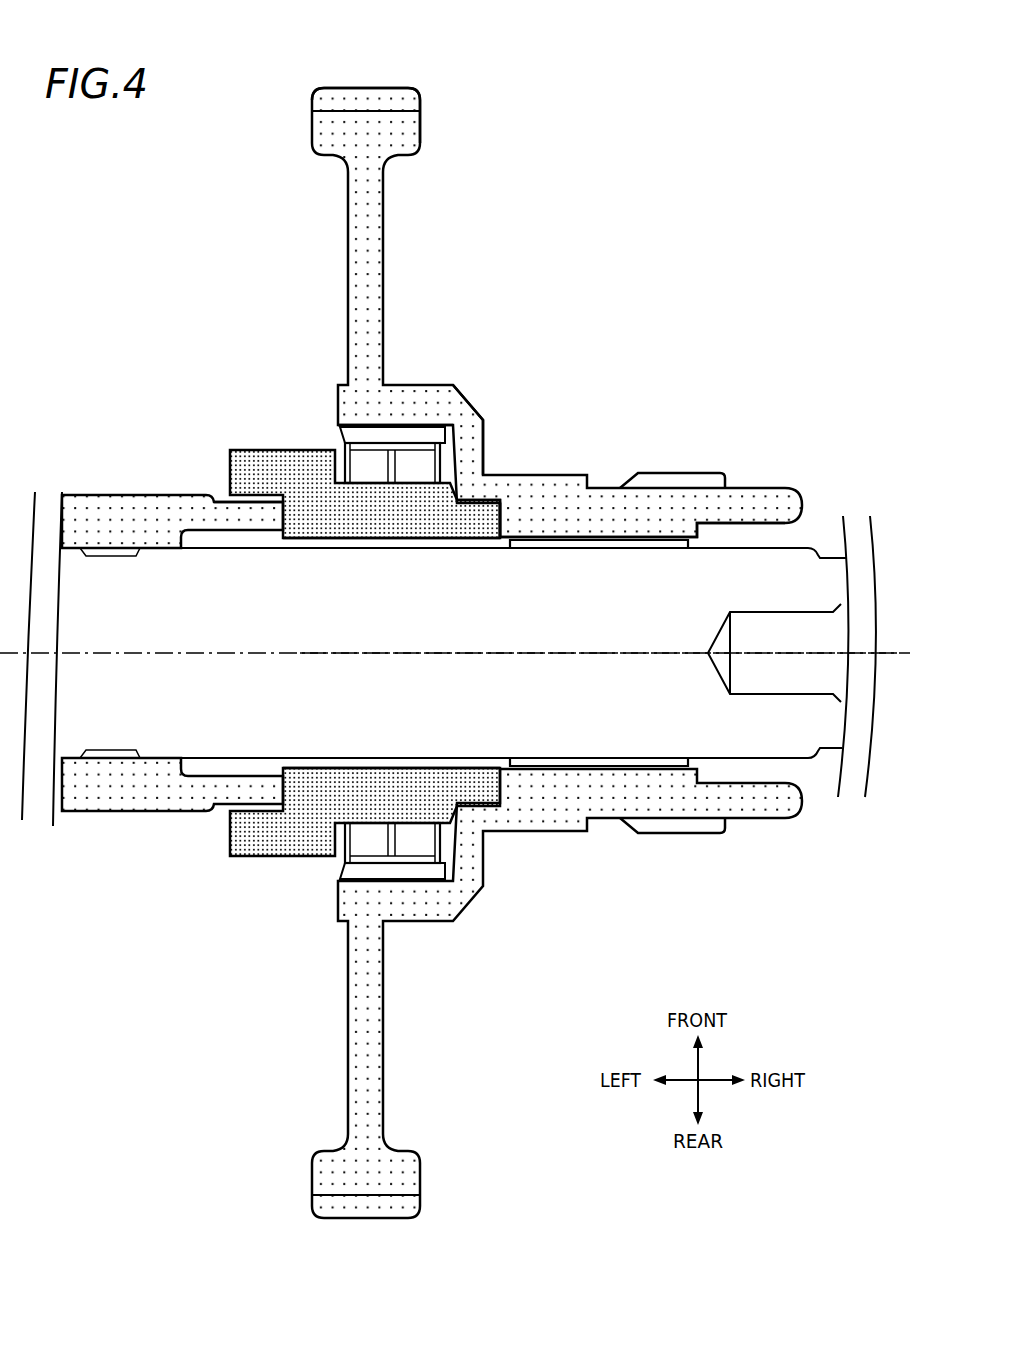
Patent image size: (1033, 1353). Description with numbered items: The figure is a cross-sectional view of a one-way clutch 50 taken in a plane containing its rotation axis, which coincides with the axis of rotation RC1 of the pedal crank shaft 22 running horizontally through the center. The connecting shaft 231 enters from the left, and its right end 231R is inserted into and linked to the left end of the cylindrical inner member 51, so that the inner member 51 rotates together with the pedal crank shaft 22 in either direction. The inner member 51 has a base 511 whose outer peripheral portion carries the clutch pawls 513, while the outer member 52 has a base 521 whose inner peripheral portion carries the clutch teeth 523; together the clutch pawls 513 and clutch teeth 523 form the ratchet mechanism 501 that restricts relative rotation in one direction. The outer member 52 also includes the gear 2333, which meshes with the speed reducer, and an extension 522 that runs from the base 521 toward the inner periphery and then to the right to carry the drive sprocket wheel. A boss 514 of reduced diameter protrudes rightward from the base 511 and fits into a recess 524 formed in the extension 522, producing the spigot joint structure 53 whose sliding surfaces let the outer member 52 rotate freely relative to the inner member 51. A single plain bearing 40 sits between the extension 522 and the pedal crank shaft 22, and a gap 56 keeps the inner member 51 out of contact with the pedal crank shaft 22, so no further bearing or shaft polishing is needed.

The pedal crank shaft 22 is at (792, 562).
The plain bearing 40 is at (657, 543).
The one-way clutch 50 is at (505, 331).
The inner member 51 is at (253, 452).
The outer member 52 is at (478, 407).
The spigot joint structure 53 is at (528, 403).
The gap 56 is at (325, 762).
The connecting shaft 231 is at (122, 493).
The right end of the connecting shaft 231R is at (227, 517).
The ratchet mechanism 501 is at (351, 598).
The base 511 is at (363, 513).
The clutch pawls 513 is at (355, 463).
The boss 514 is at (490, 502).
The base 521 is at (402, 400).
The extension 522 is at (542, 501).
The clutch teeth 523 is at (347, 432).
The recess 524 is at (488, 502).
The gear 2333 is at (375, 97).
The axis of rotation RC1 is at (160, 655).